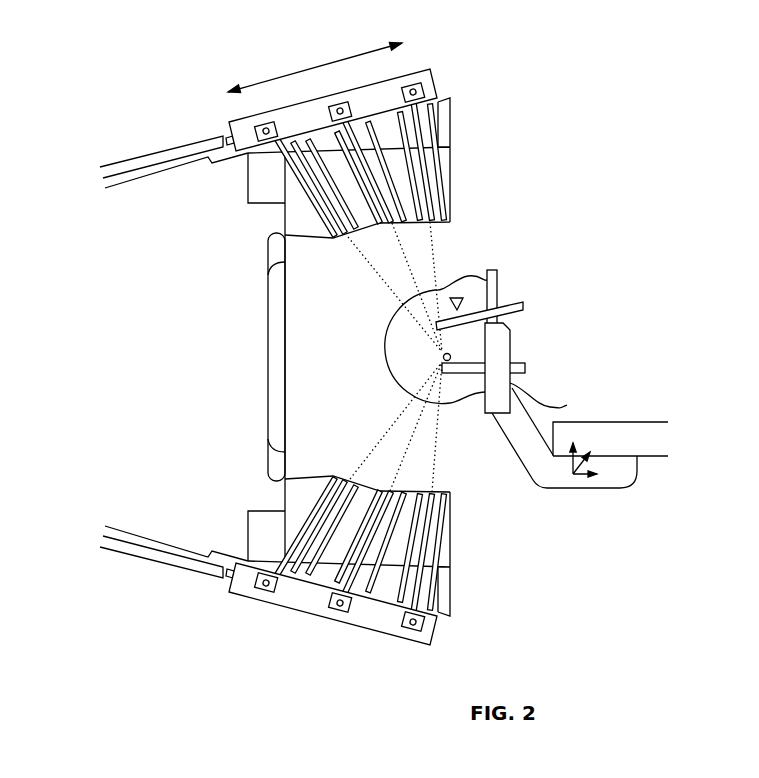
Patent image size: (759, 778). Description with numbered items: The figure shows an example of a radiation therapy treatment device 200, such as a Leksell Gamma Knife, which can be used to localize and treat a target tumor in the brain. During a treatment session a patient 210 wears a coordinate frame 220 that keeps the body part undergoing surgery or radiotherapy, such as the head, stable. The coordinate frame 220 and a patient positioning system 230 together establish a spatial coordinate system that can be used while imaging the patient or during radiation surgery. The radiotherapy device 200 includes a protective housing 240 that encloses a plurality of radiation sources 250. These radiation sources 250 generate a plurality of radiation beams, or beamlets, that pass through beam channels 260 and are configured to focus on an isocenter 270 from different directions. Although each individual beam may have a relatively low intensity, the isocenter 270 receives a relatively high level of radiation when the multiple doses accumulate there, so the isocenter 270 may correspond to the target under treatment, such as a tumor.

The radiation therapy treatment device 200 is at (424, 340).
The patient 210 is at (567, 321).
The coordinate frame 220 is at (492, 413).
The patient positioning system 230 is at (622, 427).
The protective housing 240 is at (450, 128).
The radiation sources 250 is at (433, 73).
The beam channels 260 is at (440, 205).
The isocenter 270 is at (442, 352).